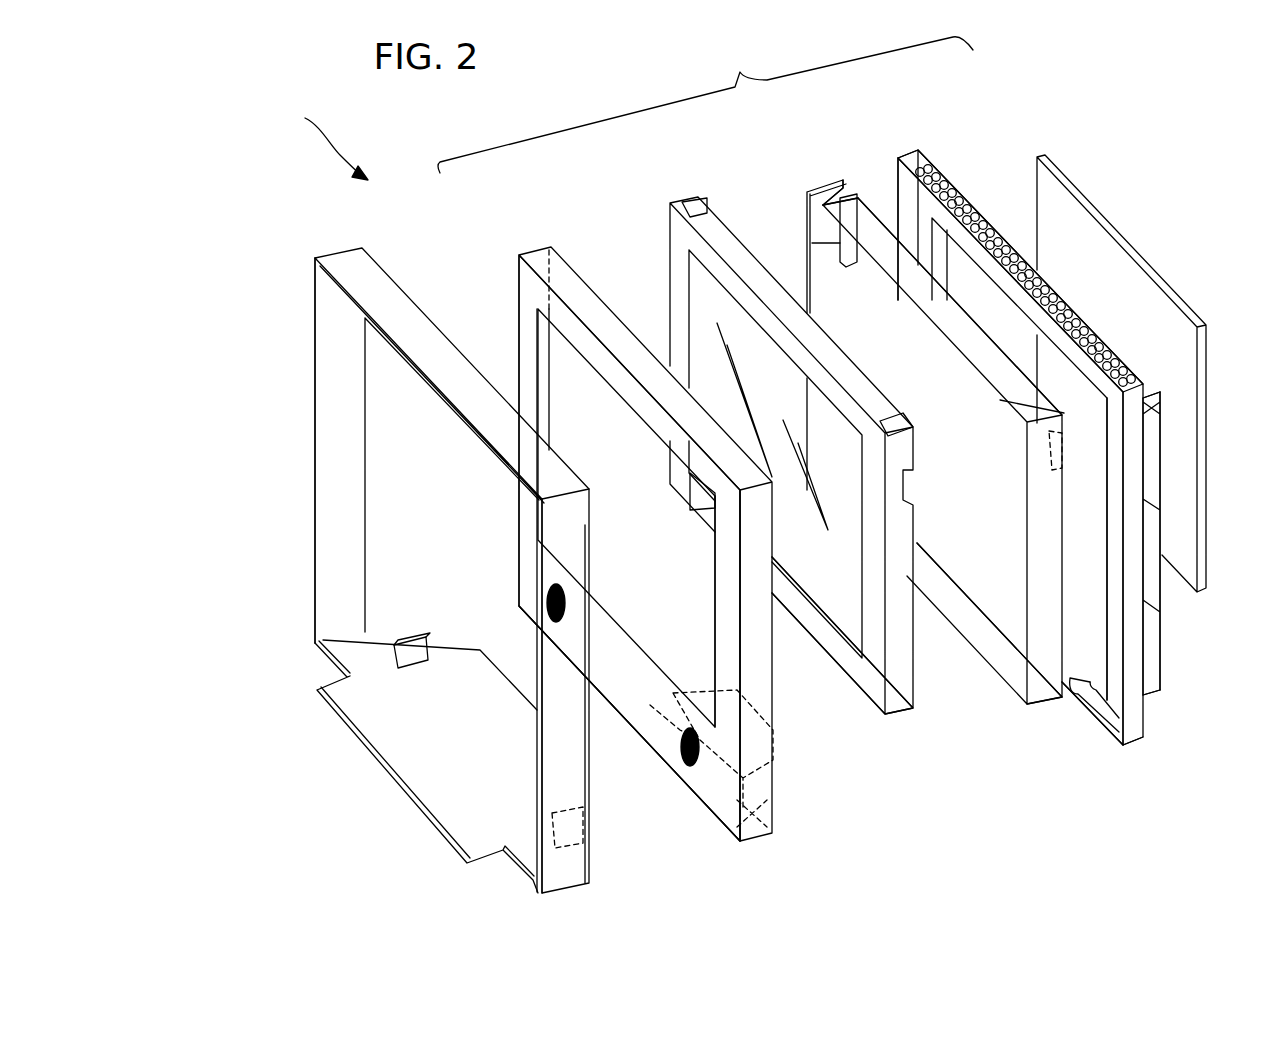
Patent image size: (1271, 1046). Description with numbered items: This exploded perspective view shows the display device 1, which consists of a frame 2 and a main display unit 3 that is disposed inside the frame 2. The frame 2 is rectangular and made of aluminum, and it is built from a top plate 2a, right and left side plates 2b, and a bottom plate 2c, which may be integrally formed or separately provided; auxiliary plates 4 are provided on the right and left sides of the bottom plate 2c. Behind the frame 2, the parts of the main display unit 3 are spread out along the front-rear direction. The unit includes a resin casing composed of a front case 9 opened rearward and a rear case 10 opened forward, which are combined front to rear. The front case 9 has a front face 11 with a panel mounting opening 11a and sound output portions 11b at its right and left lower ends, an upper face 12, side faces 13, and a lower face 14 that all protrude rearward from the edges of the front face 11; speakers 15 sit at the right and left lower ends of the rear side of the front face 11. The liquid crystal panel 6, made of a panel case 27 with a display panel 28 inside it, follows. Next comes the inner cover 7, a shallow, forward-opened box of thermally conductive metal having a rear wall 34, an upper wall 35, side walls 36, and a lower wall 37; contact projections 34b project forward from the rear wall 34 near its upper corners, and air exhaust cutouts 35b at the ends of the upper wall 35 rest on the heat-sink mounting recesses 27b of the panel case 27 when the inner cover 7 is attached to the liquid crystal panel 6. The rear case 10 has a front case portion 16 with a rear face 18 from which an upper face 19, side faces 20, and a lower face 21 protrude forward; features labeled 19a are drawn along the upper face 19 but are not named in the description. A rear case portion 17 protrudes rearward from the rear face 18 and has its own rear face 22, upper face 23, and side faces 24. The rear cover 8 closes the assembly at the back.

The display device 1 is at (298, 113).
The frame 2 is at (373, 272).
The top plate 2a is at (403, 307).
The side plates 2b is at (315, 322).
The bottom plate 2c is at (377, 725).
The main display unit 3 is at (705, 105).
The auxiliary plates 4 is at (408, 640).
The liquid crystal panel 6 is at (690, 202).
The inner cover 7 is at (855, 205).
The rear cover 8 is at (1037, 157).
The front case 9 is at (520, 254).
The rear case 10 is at (903, 155).
The front face 11 is at (647, 730).
The panel mounting opening 11a is at (727, 617).
The sound output portions 11b is at (545, 598).
The upper face 12 is at (578, 287).
The side faces 13 is at (553, 398).
The lower face 14 is at (767, 807).
The speakers 15 is at (633, 548).
The front case portion 16 is at (1134, 713).
The rear case portion 17 is at (1156, 682).
The rear face 18 is at (1109, 680).
The upper face 19 is at (912, 152).
The light emitting diode 19a is at (963, 217).
The side faces 20 is at (870, 190).
The lower face 21 is at (1084, 709).
The rear face 22 is at (1095, 530).
The upper face 23 is at (1143, 398).
The side faces 24 is at (1152, 653).
The panel case 27 is at (897, 687).
The heat-sink mounting recesses 27b is at (690, 198).
The display panel 28 is at (705, 298).
The rear wall 34 is at (852, 282).
The contact projections 34b is at (840, 243).
The upper wall 35 is at (875, 213).
The air exhaust cutouts 35b is at (843, 188).
The side walls 36 is at (790, 203).
The lower wall 37 is at (963, 613).